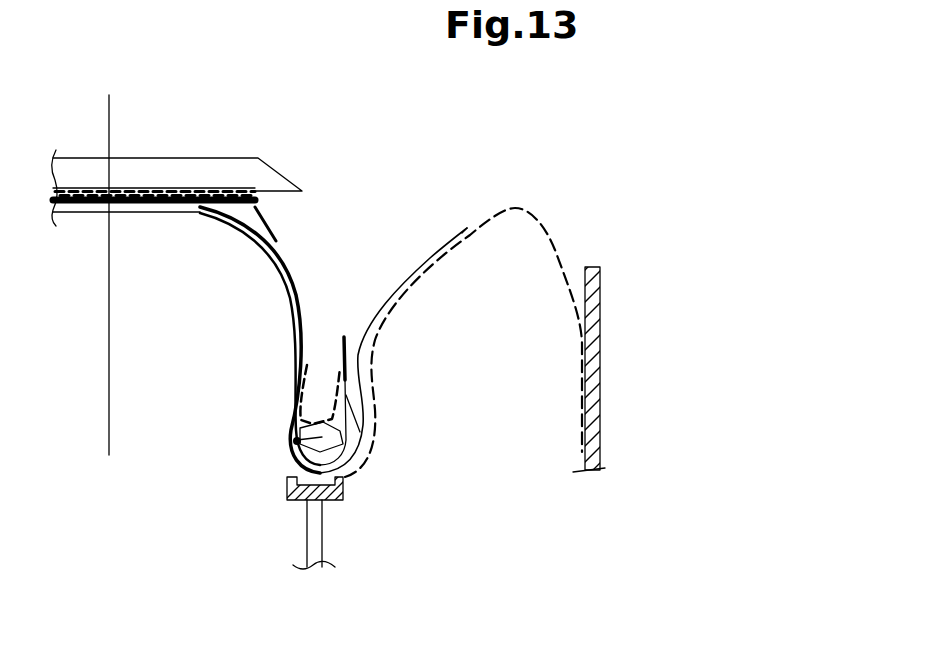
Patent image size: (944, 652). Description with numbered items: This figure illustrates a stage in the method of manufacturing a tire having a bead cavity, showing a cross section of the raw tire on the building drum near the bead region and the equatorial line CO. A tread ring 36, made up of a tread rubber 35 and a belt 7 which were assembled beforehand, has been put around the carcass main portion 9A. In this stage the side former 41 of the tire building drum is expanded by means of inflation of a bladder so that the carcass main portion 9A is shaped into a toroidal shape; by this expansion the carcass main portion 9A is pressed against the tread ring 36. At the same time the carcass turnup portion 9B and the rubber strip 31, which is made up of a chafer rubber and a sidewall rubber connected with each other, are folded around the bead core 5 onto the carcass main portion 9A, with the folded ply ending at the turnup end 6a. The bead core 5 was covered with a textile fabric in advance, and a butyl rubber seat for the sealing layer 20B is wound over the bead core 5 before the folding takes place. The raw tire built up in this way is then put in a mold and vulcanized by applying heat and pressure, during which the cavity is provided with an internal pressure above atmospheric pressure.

The tire equatorial center line CO is at (109, 101).
The tread rubber 35 is at (222, 165).
The belt 7 is at (222, 188).
The tread ring 36 is at (314, 80).
The carcass main portion 9A is at (290, 277).
The carcass turnup portion 9B is at (347, 337).
The carcass ply turn-up end 6a is at (459, 208).
The rubber strip 31 is at (392, 292).
The sealing layer 20B is at (297, 373).
The bead core 5 is at (297, 441).
The side former 41 is at (549, 230).